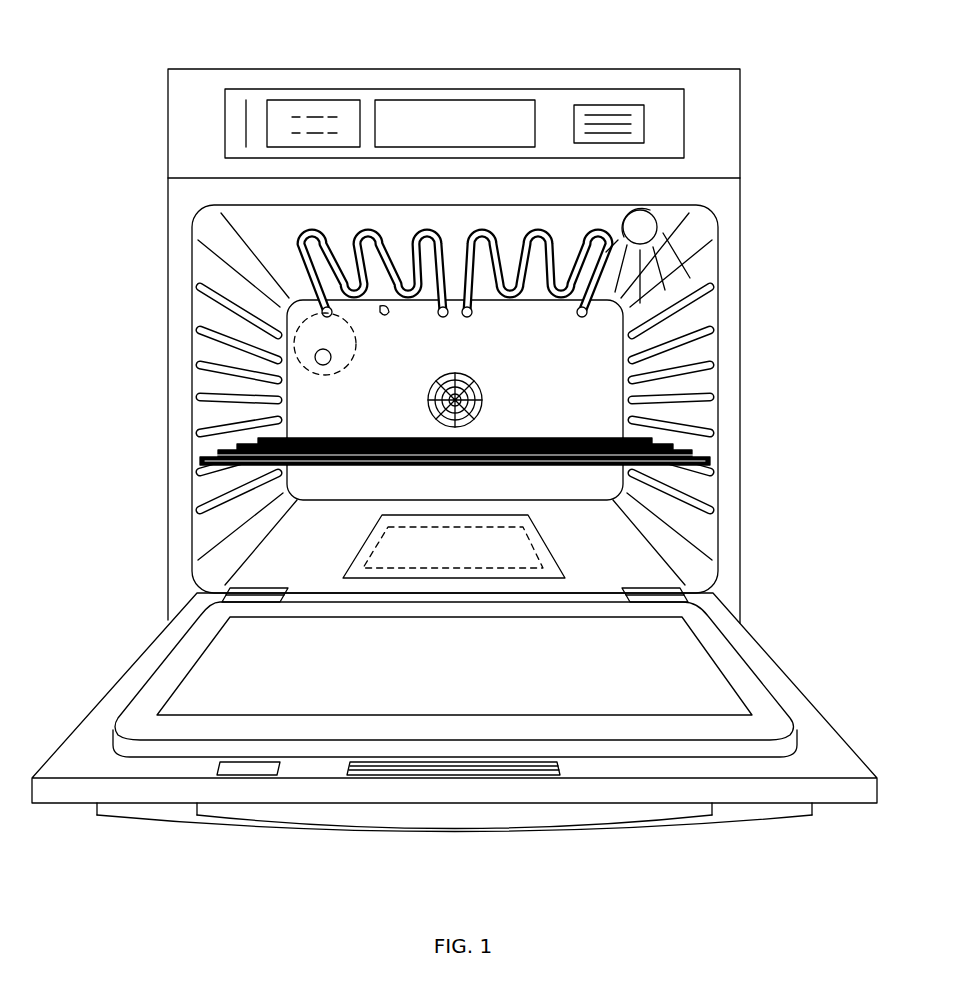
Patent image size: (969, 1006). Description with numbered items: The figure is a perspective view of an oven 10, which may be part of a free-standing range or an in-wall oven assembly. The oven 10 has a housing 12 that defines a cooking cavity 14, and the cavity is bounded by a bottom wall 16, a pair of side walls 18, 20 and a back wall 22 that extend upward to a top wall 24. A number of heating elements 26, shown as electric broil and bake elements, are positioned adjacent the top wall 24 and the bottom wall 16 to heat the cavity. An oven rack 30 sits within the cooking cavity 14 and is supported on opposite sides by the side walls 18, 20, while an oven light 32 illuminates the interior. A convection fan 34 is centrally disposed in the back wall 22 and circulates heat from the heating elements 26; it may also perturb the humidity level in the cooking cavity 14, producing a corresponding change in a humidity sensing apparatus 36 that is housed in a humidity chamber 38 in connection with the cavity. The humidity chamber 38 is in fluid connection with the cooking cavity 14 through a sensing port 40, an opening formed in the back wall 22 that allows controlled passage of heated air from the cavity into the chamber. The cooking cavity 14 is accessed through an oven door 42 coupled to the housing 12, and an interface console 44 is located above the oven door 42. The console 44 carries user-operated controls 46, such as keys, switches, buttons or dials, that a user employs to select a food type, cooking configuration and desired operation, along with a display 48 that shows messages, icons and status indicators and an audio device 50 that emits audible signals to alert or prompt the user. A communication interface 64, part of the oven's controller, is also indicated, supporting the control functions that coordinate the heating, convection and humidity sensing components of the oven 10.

The oven 10 is at (808, 145).
The housing 12 is at (727, 360).
The cooking cavity 14 is at (657, 413).
The bottom wall 16 is at (250, 580).
The side wall 18 is at (727, 483).
The side wall 20 is at (175, 482).
The back wall 22 is at (300, 388).
The top wall 24 is at (282, 258).
The heating elements 26 is at (306, 262).
The oven rack 30 is at (516, 437).
The oven light 32 is at (643, 228).
The convection fan 34 is at (428, 400).
The humidity sensing apparatus 36 is at (210, 332).
The humidity chamber 38 is at (287, 338).
The sensing port 40 is at (315, 357).
The oven door 42 is at (702, 680).
The interface console 44 is at (725, 125).
The user-operated controls 46 is at (318, 104).
The display 48 is at (462, 110).
The audio device 50 is at (610, 106).
The communication interface 64 is at (389, 311).